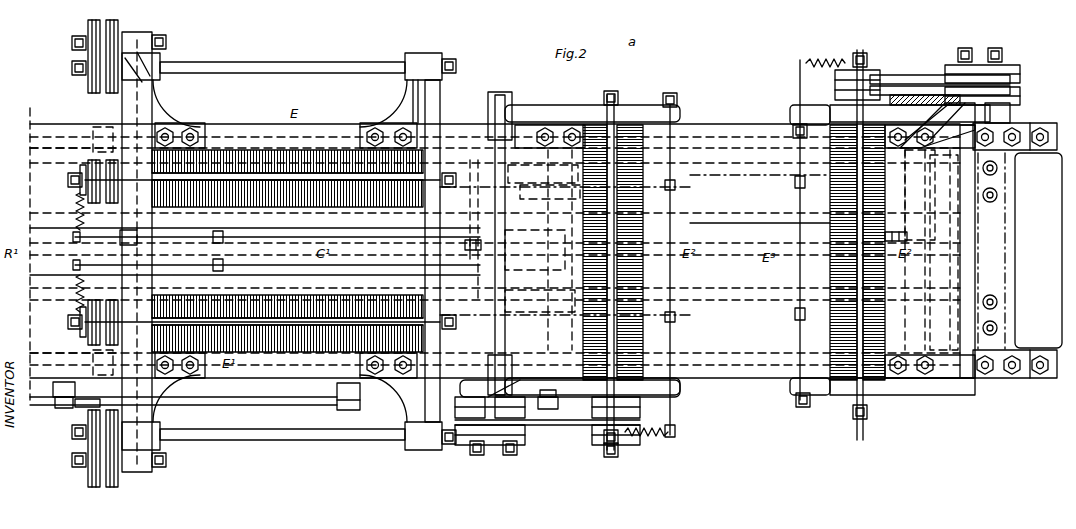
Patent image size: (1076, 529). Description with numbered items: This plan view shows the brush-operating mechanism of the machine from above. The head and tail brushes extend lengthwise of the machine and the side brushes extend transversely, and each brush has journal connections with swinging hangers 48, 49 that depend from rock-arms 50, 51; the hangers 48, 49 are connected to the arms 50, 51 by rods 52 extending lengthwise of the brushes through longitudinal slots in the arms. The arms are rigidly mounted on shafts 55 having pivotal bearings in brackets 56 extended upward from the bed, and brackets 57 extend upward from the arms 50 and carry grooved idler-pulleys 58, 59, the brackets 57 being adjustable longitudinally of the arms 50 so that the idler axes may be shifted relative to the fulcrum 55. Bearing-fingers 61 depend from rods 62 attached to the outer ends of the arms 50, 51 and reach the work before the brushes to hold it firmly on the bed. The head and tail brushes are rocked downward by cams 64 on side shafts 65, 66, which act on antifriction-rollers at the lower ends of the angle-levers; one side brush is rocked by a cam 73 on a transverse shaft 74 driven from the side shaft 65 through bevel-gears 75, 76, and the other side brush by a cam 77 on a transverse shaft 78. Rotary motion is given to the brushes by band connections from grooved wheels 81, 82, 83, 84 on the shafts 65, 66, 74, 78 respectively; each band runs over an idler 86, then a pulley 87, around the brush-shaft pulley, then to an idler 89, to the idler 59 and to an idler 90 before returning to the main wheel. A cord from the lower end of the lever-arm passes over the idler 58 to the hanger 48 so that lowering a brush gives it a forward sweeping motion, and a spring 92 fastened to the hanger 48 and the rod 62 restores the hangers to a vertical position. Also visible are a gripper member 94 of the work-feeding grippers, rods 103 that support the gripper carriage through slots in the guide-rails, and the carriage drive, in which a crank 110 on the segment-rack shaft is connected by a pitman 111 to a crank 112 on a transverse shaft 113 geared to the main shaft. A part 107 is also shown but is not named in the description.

The swinging hanger 48 is at (68, 178).
The swinging hanger 49 is at (455, 180).
The rock-arm 50 is at (150, 106).
The rock-arm 51 is at (488, 340).
The rod 52 is at (70, 314).
The shaft 55 is at (315, 66).
The bracket 56 is at (405, 56).
The bracket 57 is at (140, 34).
The grooved idler-pulley 58 is at (92, 20).
The grooved idler-pulley 59 is at (112, 20).
The bearing-finger 61 is at (218, 244).
The rod 62 is at (288, 242).
The cam 64 is at (152, 128).
The side shaft 65 is at (32, 145).
The side shaft 66 is at (30, 355).
The cam 73 is at (575, 398).
The transverse shaft 74 is at (540, 315).
The bevel-gear 75 is at (572, 195).
The bevel-gear 76 is at (543, 166).
The cam 77 is at (937, 125).
The transverse shaft 78 is at (935, 265).
The grooved wheel 81 is at (98, 105).
The grooved wheel 82 is at (88, 407).
The grooved wheel 83 is at (528, 428).
The grooved wheel 84 is at (920, 70).
The idler 86 is at (516, 440).
The pulley 87 is at (676, 430).
The idler 89 is at (640, 405).
The idler 90 is at (570, 388).
The spring 92 is at (76, 212).
The gripper member 94 is at (466, 245).
The bolt or rod 103 is at (935, 237).
The bar 107 is at (748, 232).
The crank 110 is at (370, 395).
The pitman 111 is at (300, 394).
The crank 112 is at (55, 388).
The transverse shaft 113 is at (122, 245).